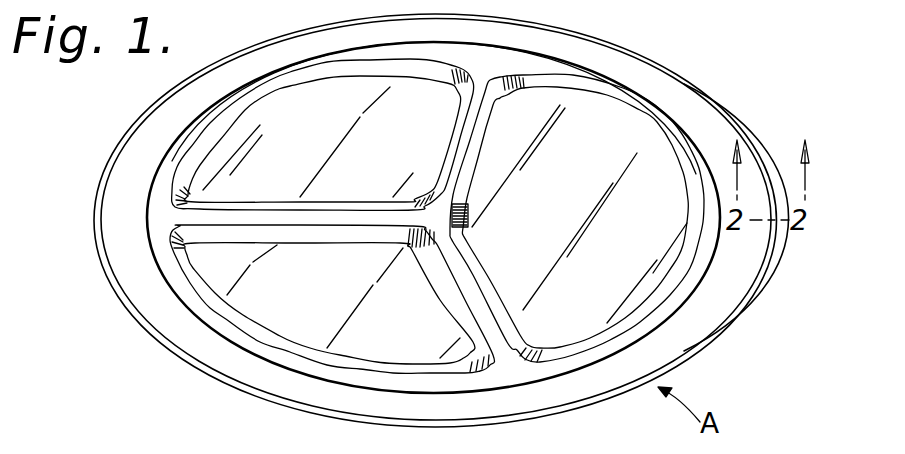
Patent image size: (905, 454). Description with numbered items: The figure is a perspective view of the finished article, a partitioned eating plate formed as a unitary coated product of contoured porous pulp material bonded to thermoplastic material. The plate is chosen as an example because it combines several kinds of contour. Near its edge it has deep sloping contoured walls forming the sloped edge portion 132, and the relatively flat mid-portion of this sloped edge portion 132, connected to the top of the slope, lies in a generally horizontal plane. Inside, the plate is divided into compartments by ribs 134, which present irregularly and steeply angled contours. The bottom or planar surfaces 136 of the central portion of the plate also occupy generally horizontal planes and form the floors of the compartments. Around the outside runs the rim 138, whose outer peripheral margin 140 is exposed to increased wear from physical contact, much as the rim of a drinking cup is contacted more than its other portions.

The sloped edge portion 132 is at (185, 167).
The ribs 134 is at (447, 149).
The planar surfaces 136 is at (270, 127).
The rim 138 is at (737, 275).
The outer peripheral margin 140 is at (717, 332).